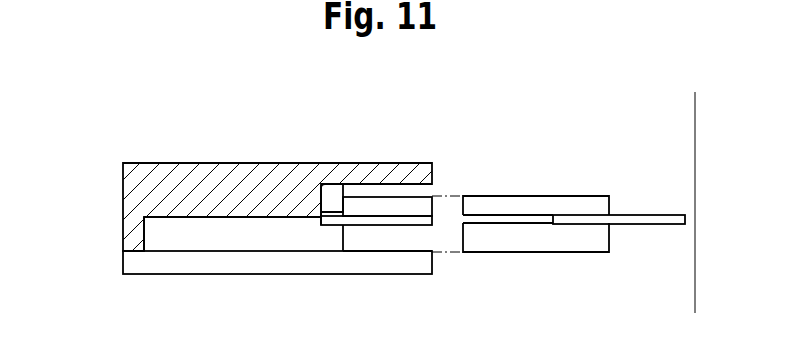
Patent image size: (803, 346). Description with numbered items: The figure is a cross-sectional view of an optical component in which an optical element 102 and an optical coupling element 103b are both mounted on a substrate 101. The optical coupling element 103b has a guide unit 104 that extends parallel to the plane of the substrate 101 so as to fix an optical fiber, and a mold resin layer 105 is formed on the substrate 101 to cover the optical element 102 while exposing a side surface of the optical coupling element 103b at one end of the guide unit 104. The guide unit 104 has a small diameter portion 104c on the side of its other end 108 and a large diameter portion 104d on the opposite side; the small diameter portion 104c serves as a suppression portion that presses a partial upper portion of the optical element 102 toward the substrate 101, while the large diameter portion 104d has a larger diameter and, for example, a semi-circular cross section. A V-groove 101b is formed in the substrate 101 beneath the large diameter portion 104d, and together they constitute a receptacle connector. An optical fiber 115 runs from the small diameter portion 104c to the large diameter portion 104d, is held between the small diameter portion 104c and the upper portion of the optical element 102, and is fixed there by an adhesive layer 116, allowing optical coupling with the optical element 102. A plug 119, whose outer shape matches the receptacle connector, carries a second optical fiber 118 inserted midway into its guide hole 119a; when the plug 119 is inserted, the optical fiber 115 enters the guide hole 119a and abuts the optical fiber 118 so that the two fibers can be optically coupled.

The substrate 101 is at (123, 264).
The V-groove 101b is at (412, 248).
The optical element 102 is at (232, 228).
The optical coupling element 103b is at (375, 193).
The guide unit 104 is at (430, 135).
The small diameter portion 104c is at (326, 206).
The large diameter portion 104d is at (397, 200).
The mold resin layer 105 is at (123, 206).
The other end 108 is at (312, 219).
The optical fiber 115 is at (418, 220).
The adhesive layer 116 is at (328, 226).
The optical fiber 118 is at (647, 213).
The plug 119 is at (555, 196).
The guide hole 119a is at (517, 219).